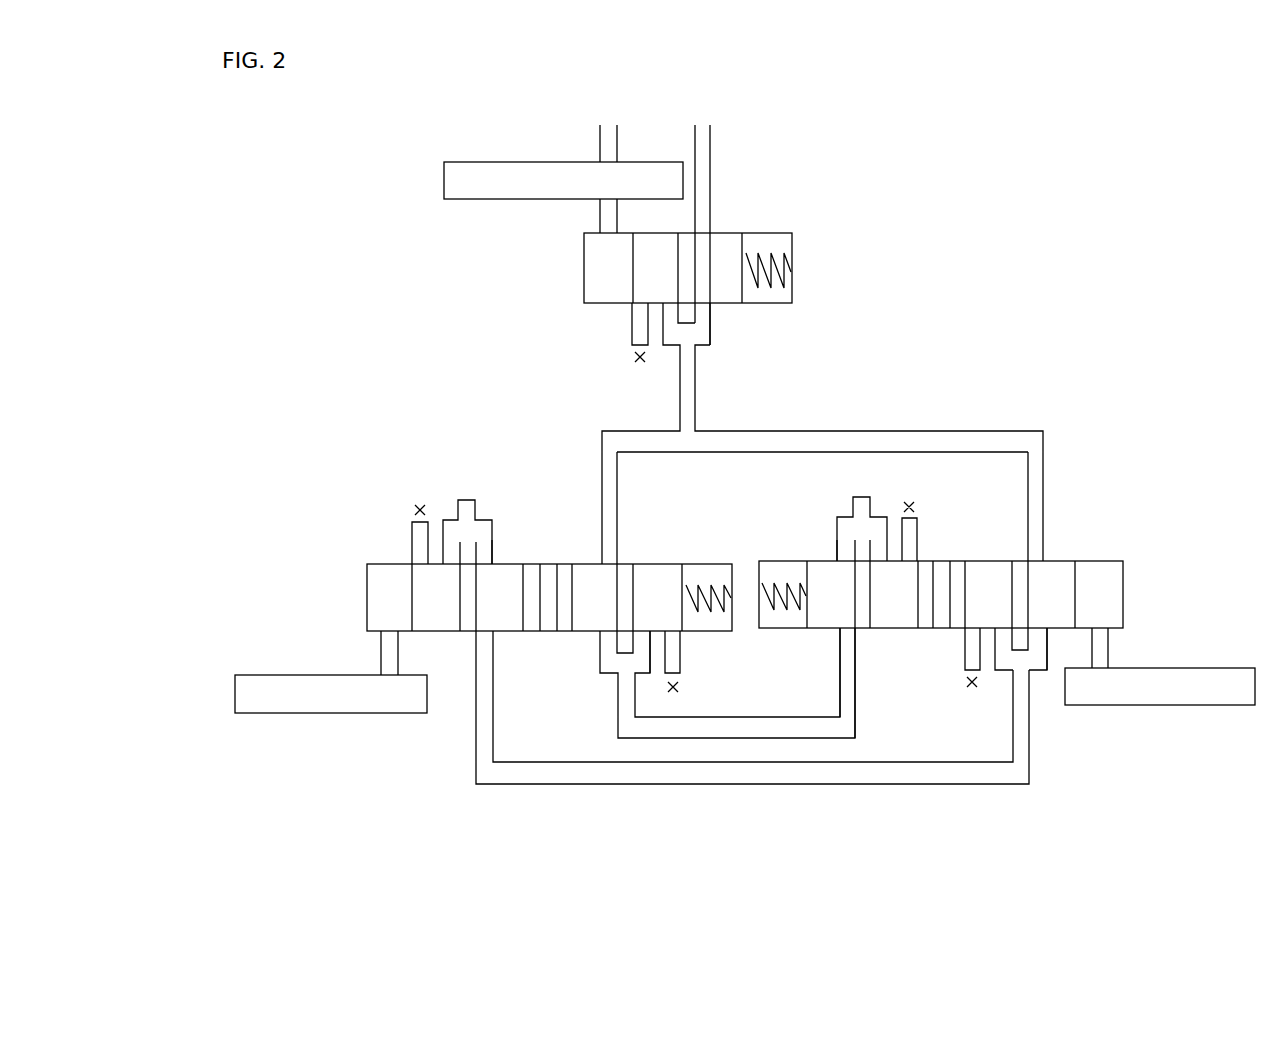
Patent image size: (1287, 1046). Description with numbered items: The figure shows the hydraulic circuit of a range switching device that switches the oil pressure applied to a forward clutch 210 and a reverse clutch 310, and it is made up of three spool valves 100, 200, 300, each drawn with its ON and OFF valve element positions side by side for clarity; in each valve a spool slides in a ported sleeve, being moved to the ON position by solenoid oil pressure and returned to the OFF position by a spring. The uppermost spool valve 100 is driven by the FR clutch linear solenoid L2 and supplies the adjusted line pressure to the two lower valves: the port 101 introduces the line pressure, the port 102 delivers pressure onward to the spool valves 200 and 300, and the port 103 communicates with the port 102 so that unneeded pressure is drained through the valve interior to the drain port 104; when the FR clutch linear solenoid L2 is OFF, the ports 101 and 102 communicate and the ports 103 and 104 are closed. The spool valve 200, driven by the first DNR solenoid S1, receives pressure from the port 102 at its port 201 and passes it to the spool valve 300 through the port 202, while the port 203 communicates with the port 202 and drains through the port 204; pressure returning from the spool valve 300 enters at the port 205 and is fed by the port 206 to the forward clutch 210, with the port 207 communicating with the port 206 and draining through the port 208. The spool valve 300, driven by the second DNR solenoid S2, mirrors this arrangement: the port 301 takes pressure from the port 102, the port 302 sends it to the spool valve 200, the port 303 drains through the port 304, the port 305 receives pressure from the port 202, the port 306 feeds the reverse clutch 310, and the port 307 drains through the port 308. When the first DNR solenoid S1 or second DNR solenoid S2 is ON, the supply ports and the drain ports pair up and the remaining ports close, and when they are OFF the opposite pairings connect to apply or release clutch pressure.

The spool valve 100 is at (583, 267).
The port 101 is at (712, 227).
The port 102 is at (712, 309).
The port 103 is at (663, 309).
The port 104 is at (632, 309).
The FR clutch linear solenoid L2 is at (444, 173).
The spool valve 200 is at (368, 581).
The port 201 is at (618, 562).
The port 202 is at (603, 640).
The port 203 is at (650, 640).
The port 204 is at (682, 638).
The port 205 is at (476, 639).
The port 206 is at (491, 559).
The port 207 is at (443, 559).
The port 208 is at (412, 559).
The forward clutch 210 is at (470, 544).
The spool valve 300 is at (1123, 583).
The port 301 is at (1027, 557).
The port 302 is at (1045, 635).
The port 303 is at (997, 635).
The port 304 is at (965, 635).
The port 305 is at (855, 635).
The port 306 is at (838, 555).
The port 307 is at (886, 555).
The port 308 is at (918, 555).
The reverse clutch 310 is at (862, 543).
The first DNR solenoid S1 is at (249, 677).
The second DNR solenoid S2 is at (1222, 669).